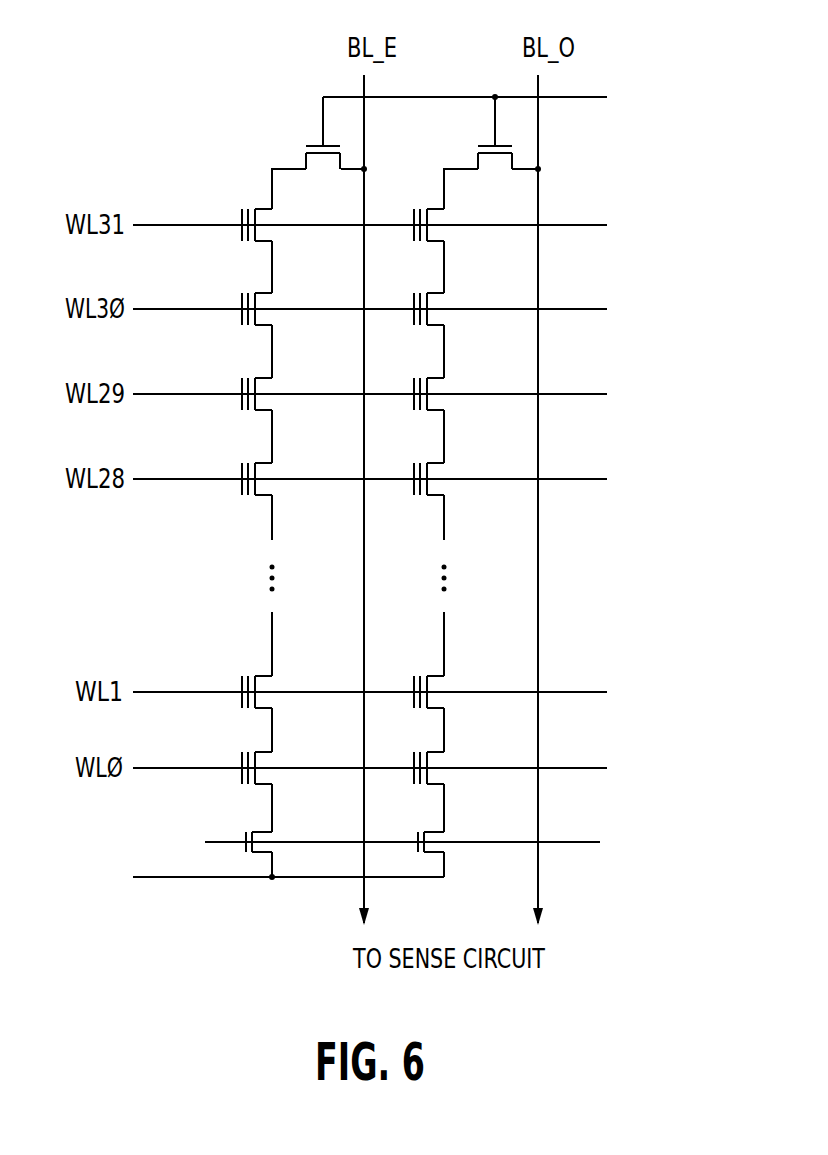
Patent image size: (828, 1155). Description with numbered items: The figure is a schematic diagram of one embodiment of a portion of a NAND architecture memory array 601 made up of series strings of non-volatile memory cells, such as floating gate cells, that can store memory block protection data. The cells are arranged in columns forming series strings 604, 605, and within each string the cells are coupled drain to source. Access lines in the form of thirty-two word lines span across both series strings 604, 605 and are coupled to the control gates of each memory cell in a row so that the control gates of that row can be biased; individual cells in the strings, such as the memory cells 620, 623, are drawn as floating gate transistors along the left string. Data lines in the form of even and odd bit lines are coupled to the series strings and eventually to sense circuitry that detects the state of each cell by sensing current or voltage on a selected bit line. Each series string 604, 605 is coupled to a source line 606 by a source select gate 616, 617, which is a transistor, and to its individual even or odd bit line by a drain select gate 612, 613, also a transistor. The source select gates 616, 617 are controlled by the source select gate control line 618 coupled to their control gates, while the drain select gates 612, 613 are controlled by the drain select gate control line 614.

The memory array 601 is at (214, 143).
The series string 604 is at (247, 513).
The series string 605 is at (455, 513).
The source line 606 is at (132, 888).
The drain select gate 612 is at (305, 145).
The drain select gate 613 is at (477, 145).
The drain select gate control line SG(D) 614 is at (590, 96).
The source select gate 616 is at (252, 857).
The source select gate 617 is at (427, 857).
The source select gate control line SG(S) 618 is at (585, 840).
The memory cell transistor 620 is at (247, 247).
The memory cell transistor 623 is at (245, 792).